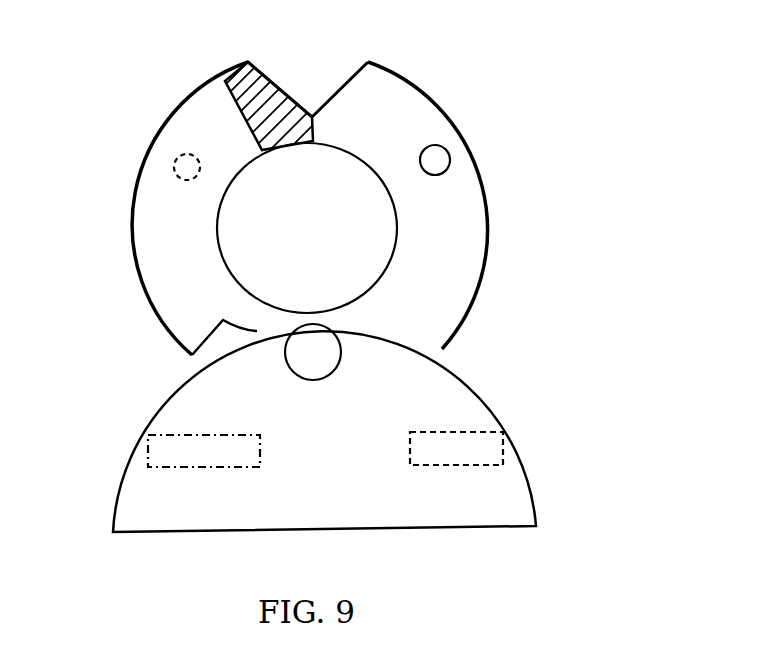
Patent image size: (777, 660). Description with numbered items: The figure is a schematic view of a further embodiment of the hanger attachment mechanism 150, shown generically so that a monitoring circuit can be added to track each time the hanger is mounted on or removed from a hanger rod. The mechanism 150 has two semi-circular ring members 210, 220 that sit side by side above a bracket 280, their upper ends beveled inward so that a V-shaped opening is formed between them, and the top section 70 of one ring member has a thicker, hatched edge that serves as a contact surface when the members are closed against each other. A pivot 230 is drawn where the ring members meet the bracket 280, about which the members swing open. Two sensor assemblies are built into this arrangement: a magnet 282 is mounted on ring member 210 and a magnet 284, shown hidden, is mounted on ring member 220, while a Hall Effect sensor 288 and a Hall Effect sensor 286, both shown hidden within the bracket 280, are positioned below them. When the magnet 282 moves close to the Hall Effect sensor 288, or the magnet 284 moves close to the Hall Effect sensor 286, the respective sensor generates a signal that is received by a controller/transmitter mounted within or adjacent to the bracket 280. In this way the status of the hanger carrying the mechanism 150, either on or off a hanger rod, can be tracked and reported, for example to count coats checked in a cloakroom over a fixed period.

The top section 70 is at (245, 76).
The mechanism 150 is at (111, 138).
The semi-circular ring member 210 is at (457, 250).
The semi-circular ring member 220 is at (173, 253).
The pivot pin 230 is at (310, 352).
The bracket 280 is at (457, 485).
The magnet 282 is at (450, 158).
The magnet 284 is at (174, 167).
The Hall Effect sensor 286 is at (148, 467).
The Hall Effect sensor 288 is at (503, 460).